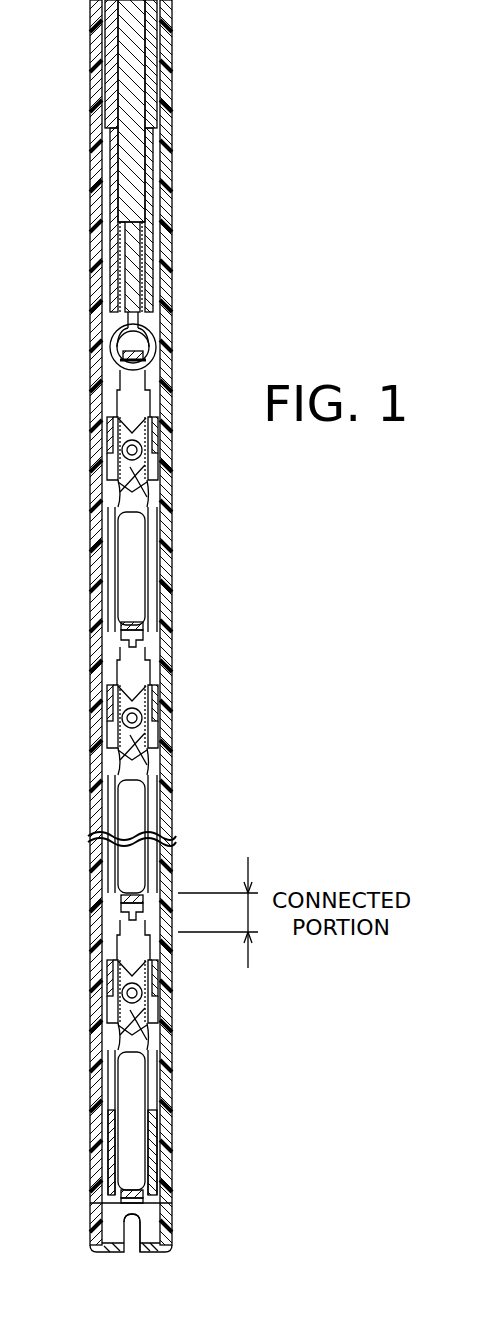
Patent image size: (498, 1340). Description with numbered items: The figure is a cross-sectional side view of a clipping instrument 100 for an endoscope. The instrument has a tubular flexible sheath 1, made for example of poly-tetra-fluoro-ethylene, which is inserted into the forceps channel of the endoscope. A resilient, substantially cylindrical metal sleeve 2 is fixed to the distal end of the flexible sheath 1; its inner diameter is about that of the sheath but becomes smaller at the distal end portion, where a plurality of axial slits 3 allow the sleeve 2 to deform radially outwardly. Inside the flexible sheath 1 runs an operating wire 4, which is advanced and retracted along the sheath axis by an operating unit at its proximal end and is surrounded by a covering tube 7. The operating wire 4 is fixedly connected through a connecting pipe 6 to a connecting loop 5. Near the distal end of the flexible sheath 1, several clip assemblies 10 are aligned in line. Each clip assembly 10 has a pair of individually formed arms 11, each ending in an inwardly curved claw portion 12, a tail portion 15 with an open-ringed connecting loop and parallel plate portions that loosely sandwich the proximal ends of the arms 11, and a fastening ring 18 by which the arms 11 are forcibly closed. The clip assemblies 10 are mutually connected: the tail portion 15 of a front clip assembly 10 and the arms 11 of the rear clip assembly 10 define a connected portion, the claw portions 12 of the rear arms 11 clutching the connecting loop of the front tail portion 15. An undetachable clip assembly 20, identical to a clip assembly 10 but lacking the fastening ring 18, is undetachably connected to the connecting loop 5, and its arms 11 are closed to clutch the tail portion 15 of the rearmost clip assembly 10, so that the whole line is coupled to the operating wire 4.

The flexible sheath 1 is at (97, 328).
The sleeve 2 is at (173, 1238).
The slits 3 is at (132, 1242).
The operating wire 4 is at (125, 38).
The connecting loop 5 is at (143, 332).
The connecting pipe 6 is at (150, 232).
The covering tube 7 is at (153, 90).
The clip assembly 10 is at (148, 762).
The arms 11 is at (108, 555).
The claw portion 12 is at (122, 643).
The tail portion 15 is at (120, 398).
The fastening ring 18 is at (110, 735).
The undetachable clip assembly 20 is at (147, 494).
The clipping instrument 100 is at (310, 668).